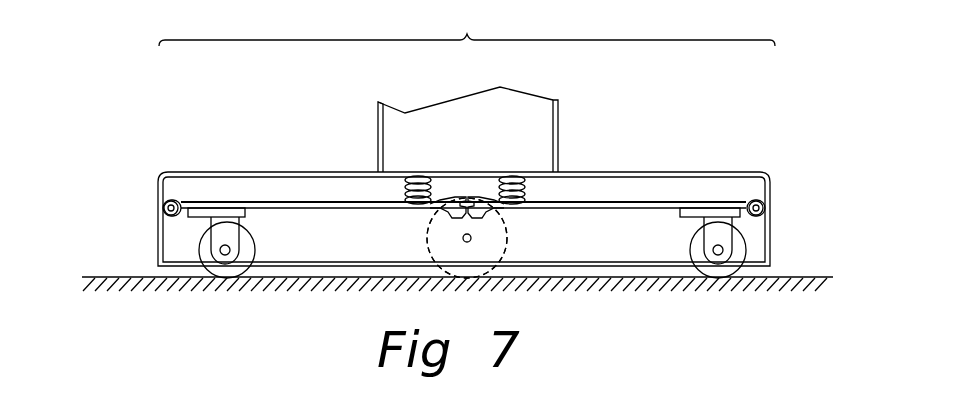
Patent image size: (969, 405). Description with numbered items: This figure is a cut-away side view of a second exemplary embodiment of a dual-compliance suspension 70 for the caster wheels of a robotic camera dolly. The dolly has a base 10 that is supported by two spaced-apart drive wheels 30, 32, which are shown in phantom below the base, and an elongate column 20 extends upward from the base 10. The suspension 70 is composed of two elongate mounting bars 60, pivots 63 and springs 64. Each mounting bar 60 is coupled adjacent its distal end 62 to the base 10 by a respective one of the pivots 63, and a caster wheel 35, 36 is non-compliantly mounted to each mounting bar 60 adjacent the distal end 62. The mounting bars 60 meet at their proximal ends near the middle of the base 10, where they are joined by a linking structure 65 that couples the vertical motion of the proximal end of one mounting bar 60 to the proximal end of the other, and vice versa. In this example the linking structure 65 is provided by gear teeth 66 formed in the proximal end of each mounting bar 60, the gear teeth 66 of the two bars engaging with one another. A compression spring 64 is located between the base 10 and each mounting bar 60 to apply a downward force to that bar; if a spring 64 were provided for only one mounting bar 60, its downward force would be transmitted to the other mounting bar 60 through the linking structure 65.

The base 10 is at (187, 172).
The elongate column 20 is at (558, 118).
The drive wheel 30 is at (507, 250).
The drive wheel 32 is at (467, 238).
The caster wheel 35 is at (745, 242).
The caster wheel 36 is at (200, 246).
The mounting bar 60 is at (290, 200).
The distal end 62 is at (178, 198).
The pivot 63 is at (163, 208).
The compression spring 64 is at (405, 188).
The linking structure 65 is at (490, 148).
The gear teeth 66 is at (455, 198).
The dual-compliance suspension 70 is at (467, 26).